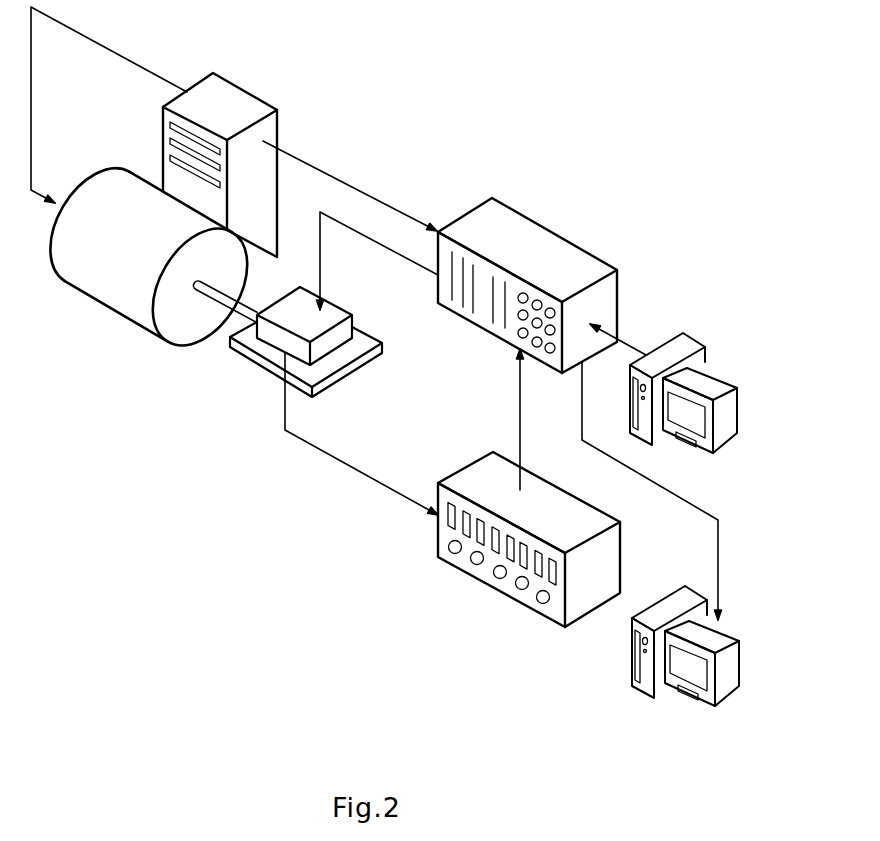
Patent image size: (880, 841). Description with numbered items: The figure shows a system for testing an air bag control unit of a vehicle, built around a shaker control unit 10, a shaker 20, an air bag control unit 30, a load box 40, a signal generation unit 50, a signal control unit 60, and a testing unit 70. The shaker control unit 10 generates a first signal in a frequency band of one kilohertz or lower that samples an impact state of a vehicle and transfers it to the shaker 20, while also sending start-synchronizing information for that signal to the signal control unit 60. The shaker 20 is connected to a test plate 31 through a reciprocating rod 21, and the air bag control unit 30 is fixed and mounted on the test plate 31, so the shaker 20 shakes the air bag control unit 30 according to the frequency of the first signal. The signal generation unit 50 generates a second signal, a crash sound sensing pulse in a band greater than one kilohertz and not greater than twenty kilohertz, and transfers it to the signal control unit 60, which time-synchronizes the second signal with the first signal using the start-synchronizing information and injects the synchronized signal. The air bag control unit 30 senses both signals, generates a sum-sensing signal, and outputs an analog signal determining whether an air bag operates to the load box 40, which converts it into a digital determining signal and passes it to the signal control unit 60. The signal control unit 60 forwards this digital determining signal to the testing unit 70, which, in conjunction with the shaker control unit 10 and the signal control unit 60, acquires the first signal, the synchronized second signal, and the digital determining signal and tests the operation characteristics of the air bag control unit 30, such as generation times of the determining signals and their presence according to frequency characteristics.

The shaker control unit 10 is at (247, 92).
The shaker 20 is at (110, 310).
The reciprocating rod 21 is at (240, 312).
The air bag control unit 30 is at (352, 315).
The test plate 31 is at (367, 340).
The load box 40 is at (492, 450).
The signal generation unit 50 is at (728, 378).
The signal control unit 60 is at (555, 230).
The testing unit 70 is at (728, 630).